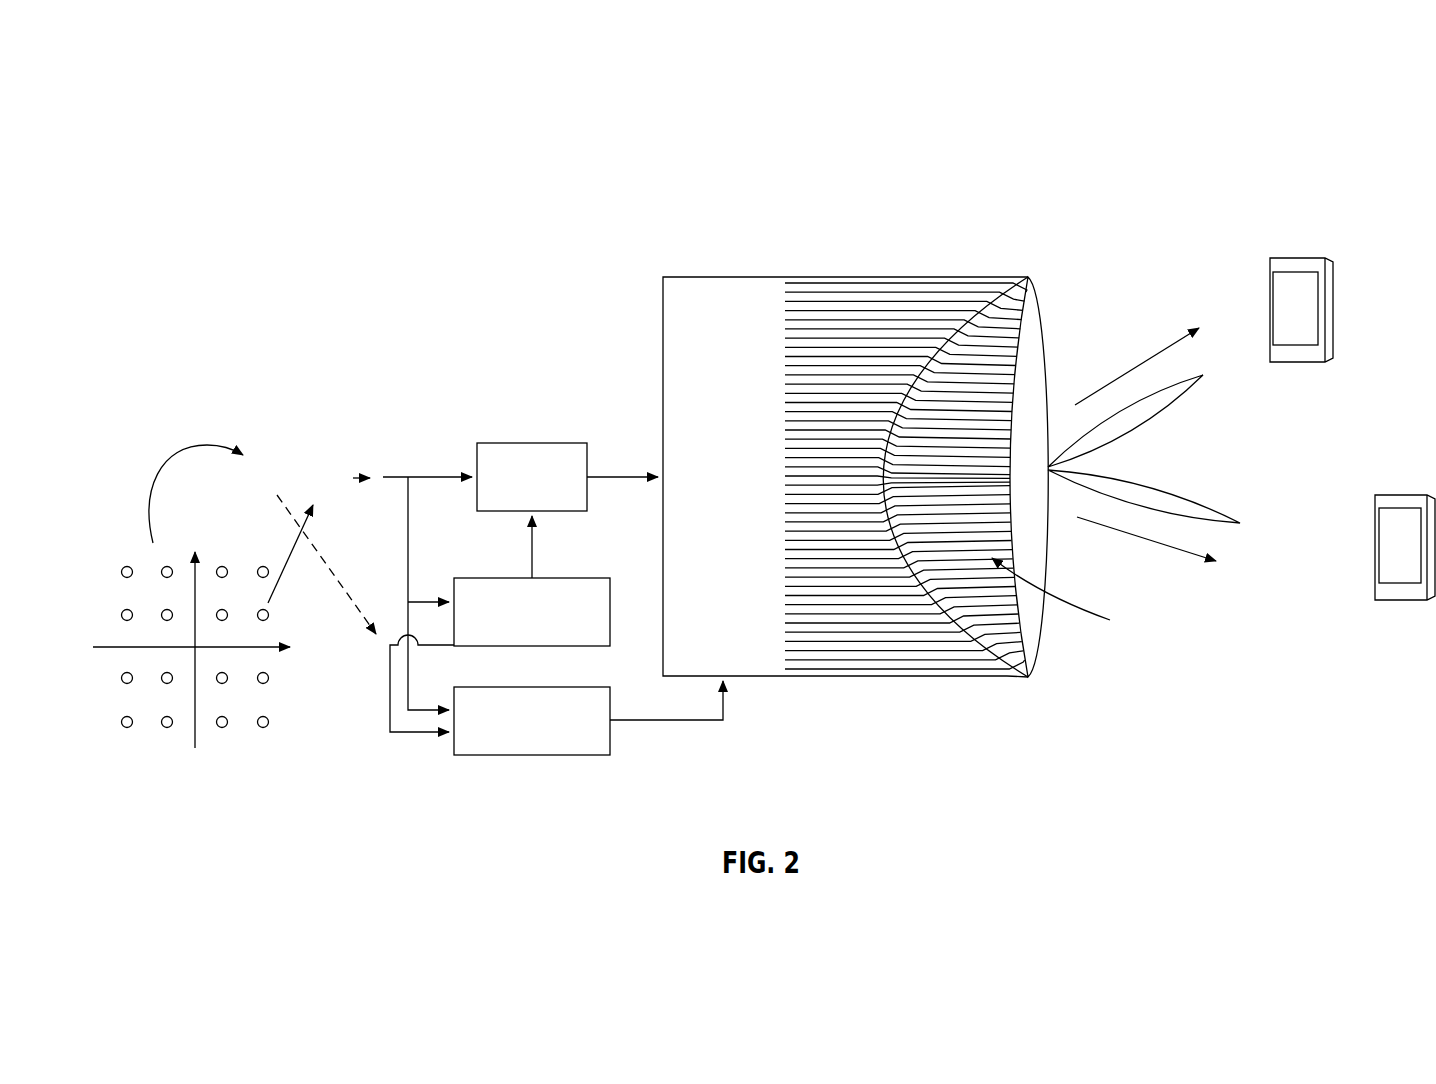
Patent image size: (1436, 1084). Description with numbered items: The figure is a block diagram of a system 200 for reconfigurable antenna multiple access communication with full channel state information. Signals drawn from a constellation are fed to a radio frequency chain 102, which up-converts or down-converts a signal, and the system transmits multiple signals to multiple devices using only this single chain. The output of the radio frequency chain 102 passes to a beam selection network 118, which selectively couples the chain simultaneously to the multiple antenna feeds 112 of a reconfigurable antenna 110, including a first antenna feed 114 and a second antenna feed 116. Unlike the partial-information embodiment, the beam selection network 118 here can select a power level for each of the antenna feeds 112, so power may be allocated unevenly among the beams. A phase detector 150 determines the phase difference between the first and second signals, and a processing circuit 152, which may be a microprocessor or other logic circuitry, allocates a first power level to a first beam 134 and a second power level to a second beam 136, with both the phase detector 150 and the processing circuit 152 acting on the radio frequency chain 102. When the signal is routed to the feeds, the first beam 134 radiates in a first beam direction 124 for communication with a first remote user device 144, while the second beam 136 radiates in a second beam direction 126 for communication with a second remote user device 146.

The system 200 is at (190, 189).
The radio frequency chain 102 is at (532, 443).
The reconfigurable antenna 110 is at (1028, 277).
The multiple antenna feeds 112 is at (785, 677).
The first antenna feed 114 is at (820, 317).
The second antenna feed 116 is at (810, 522).
The beam selection network 118 is at (663, 355).
The first beam direction 124 is at (1147, 542).
The second beam direction 126 is at (1140, 365).
The first beam 134 is at (1167, 488).
The second beam 136 is at (1167, 413).
The first remote user device 144 is at (1373, 548).
The second remote user device 146 is at (1268, 290).
The phase detector 150 is at (530, 756).
The processing circuit 152 is at (472, 578).